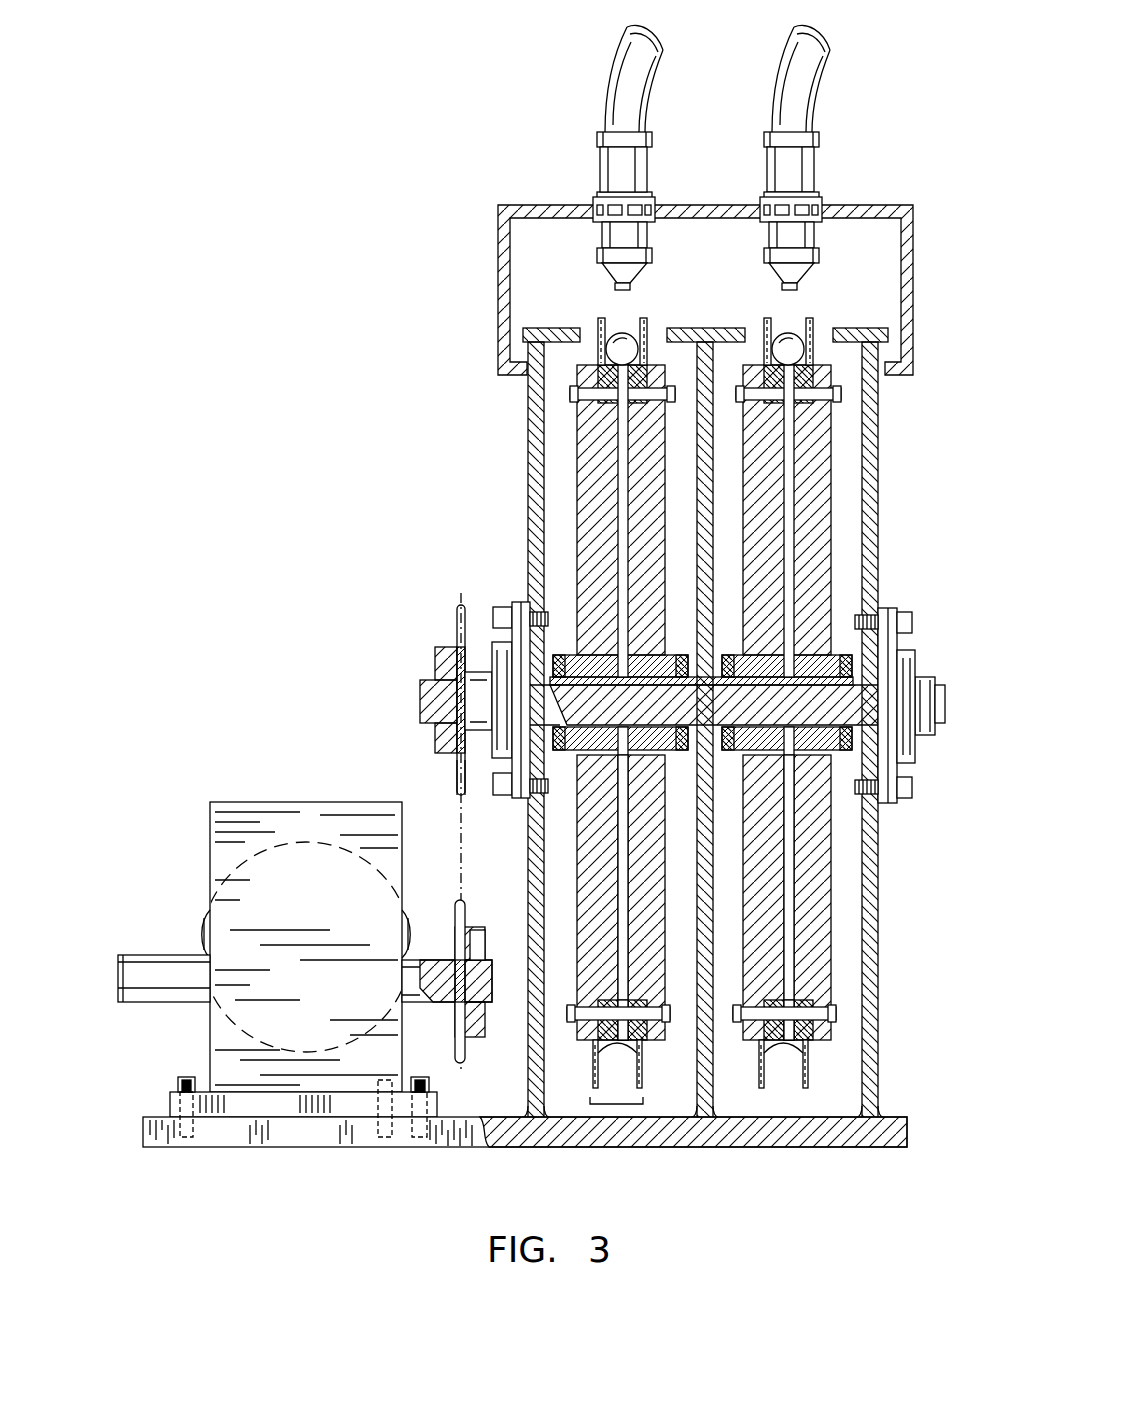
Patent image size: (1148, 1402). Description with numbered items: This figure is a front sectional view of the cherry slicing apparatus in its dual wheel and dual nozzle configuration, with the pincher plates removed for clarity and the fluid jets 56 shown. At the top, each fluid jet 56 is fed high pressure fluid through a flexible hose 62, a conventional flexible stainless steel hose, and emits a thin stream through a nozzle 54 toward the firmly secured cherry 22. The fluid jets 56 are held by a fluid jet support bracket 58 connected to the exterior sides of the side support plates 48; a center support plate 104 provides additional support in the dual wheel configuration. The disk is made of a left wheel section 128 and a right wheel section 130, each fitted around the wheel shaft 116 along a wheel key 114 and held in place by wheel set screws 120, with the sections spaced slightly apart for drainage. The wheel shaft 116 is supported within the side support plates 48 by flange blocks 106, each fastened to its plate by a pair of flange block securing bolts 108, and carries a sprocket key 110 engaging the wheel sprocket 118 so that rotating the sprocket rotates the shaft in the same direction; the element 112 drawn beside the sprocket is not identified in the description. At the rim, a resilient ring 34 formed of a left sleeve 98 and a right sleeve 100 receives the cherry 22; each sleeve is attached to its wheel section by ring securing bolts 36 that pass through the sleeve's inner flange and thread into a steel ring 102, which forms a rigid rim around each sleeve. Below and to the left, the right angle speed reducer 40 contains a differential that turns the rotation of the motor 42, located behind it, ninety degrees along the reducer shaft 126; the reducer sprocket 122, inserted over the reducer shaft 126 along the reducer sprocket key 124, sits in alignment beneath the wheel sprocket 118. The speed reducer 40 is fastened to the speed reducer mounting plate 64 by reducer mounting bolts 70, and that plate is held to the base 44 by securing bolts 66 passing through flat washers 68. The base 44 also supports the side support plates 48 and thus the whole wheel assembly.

The flexible hose 62 is at (605, 93).
The fluid jet 56 is at (637, 163).
The nozzle 54 is at (627, 276).
The fluid jet support bracket 58 is at (498, 285).
The side support plate 48 is at (552, 327).
The center support plate 104 is at (725, 327).
The cherry 22 is at (627, 335).
The left wheel section 128 is at (595, 448).
The right wheel section 130 is at (657, 477).
The wheel set screw 120 is at (562, 655).
The wheel key 114 is at (664, 665).
The sprocket 112 is at (445, 660).
The flange block securing bolt 108 is at (502, 610).
The sprocket key 110 is at (435, 662).
The wheel shaft 116 is at (427, 707).
The wheel sprocket 118 is at (455, 778).
The flange block 106 is at (522, 797).
The right angle speed reducer 40 is at (210, 838).
The motor 42 is at (200, 928).
The reducer sprocket 122 is at (457, 905).
The reducer sprocket key 124 is at (492, 957).
The reducer shaft 126 is at (167, 992).
The flat washer 68 is at (178, 1082).
The securing bolt 66 is at (178, 1147).
The reducer mounting bolt 70 is at (420, 1150).
The speed reducer mounting plate 64 is at (282, 1103).
The base 44 is at (467, 1137).
The ring securing bolt 36 is at (665, 1007).
The steel ring 102 is at (607, 968).
The left sleeve 98 is at (597, 1070).
The right sleeve 100 is at (640, 1063).
The resilient ring 34 is at (617, 1106).